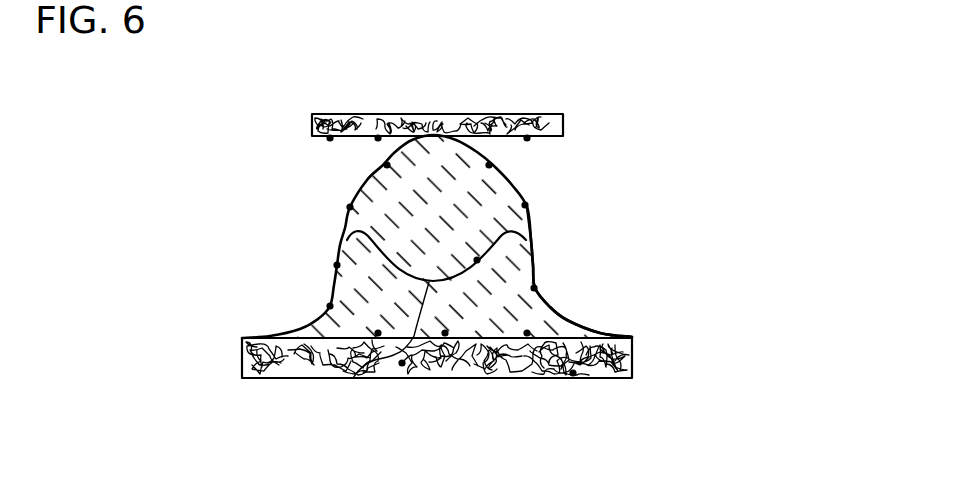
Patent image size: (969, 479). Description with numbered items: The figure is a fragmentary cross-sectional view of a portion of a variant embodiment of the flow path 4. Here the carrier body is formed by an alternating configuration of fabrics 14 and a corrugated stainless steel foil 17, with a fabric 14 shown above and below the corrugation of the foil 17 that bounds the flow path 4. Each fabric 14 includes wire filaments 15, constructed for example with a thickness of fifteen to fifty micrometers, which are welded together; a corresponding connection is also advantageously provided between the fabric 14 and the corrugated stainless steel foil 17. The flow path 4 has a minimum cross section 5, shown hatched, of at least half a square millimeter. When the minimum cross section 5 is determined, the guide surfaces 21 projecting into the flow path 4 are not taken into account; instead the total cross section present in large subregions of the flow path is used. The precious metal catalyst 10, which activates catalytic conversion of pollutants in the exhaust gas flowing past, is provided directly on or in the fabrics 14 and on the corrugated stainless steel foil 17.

The flow path 4 is at (320, 338).
The minimum cross section 5 is at (508, 256).
The precious metal catalyst 10 is at (330, 140).
The fabric 14 is at (543, 115).
The wire filament 15 is at (497, 378).
The corrugated stainless steel foil 17 is at (552, 305).
The guide surface 21 is at (353, 378).